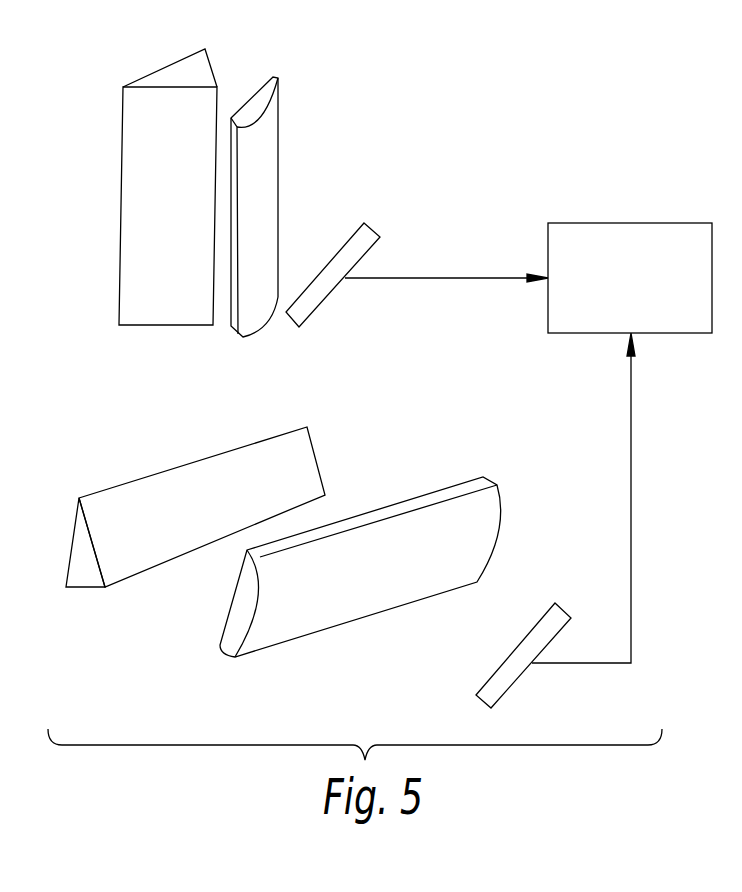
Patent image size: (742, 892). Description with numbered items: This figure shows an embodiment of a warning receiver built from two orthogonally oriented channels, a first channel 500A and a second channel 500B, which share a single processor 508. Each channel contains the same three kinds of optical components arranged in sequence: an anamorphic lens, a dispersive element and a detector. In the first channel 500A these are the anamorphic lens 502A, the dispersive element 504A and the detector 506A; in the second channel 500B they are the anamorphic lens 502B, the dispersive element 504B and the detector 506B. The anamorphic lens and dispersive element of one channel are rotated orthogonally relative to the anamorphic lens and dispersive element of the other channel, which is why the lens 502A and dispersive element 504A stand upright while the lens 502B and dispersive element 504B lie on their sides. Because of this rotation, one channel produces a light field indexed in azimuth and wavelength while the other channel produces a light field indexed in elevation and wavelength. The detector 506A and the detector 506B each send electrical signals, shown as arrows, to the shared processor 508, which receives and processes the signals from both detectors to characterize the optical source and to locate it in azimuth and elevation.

The first channel 500A is at (405, 100).
The anamorphic lens 502A is at (138, 139).
The dispersive element 504A is at (270, 141).
The detector 506A is at (377, 226).
The processor 508 is at (632, 223).
The second channel 500B is at (430, 422).
The anamorphic lens 502B is at (200, 473).
The dispersive element 504B is at (443, 495).
The detector 506B is at (517, 645).